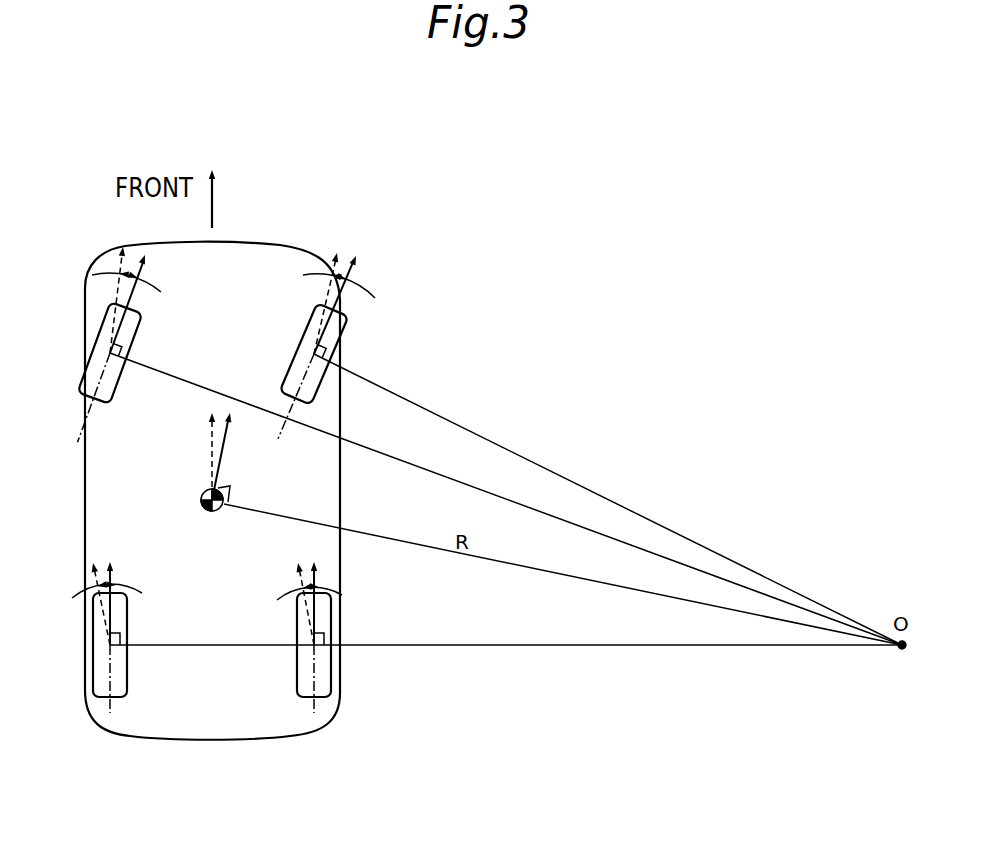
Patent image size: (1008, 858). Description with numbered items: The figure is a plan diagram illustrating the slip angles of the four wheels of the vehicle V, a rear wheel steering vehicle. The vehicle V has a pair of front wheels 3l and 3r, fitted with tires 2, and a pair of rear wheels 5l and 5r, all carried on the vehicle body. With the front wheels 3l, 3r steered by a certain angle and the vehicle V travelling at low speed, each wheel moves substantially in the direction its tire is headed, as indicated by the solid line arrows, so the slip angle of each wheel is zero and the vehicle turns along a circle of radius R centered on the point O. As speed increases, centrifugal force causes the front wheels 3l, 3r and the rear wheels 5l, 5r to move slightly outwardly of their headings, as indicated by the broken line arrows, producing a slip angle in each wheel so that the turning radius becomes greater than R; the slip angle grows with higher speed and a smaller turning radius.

The motor vehicle V is at (336, 206).
The tire 2 is at (273, 248).
The left front wheel 3l is at (100, 362).
The right front wheel 3r is at (332, 347).
The left rear wheel 5l is at (98, 675).
The right rear wheel 5r is at (325, 682).